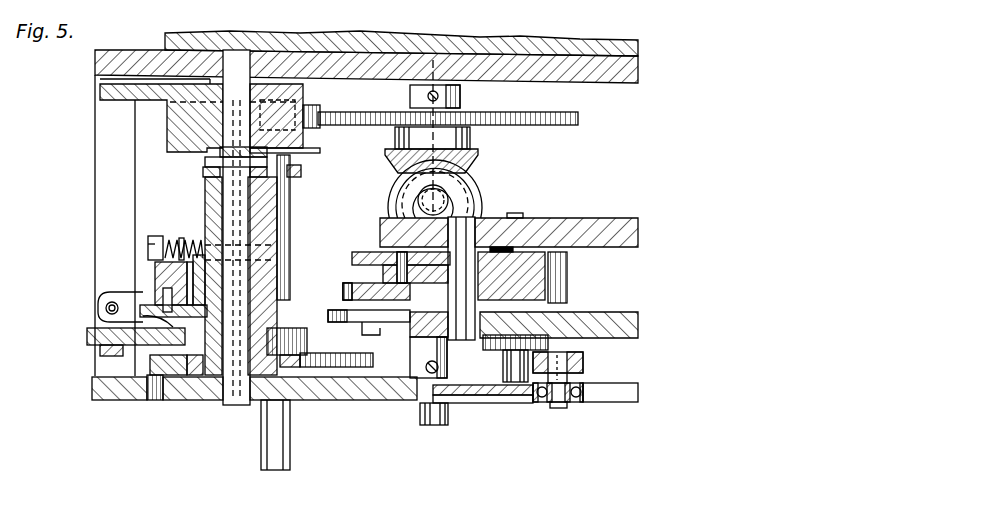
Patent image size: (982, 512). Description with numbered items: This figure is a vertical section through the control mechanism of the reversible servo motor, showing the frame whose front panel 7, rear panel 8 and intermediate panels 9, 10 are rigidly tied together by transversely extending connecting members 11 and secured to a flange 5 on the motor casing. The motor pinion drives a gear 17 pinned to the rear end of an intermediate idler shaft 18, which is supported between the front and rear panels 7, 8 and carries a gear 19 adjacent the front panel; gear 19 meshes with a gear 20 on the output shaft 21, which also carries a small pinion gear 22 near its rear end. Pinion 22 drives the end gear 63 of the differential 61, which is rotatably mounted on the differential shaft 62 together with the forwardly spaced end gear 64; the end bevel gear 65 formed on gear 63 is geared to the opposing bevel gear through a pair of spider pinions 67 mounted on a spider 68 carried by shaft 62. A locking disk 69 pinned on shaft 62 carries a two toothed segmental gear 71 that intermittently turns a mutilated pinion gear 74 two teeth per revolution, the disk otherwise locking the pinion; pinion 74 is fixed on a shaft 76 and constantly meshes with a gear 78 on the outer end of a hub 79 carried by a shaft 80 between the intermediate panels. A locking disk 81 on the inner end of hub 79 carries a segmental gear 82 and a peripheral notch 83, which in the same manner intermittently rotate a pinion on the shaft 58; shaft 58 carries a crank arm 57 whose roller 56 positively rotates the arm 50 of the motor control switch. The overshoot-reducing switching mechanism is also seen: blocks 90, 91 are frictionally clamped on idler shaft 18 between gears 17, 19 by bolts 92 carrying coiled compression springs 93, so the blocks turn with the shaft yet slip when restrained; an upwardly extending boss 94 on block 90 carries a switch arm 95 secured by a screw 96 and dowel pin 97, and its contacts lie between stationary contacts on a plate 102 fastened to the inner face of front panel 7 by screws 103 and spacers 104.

The flange 5 is at (404, 42).
The front panel 7 is at (128, 392).
The rear panel 8 is at (142, 50).
The intermediate panel 9 is at (640, 328).
The intermediate panel 10 is at (592, 218).
The connecting members 11 is at (96, 152).
The gear 17 is at (100, 88).
The intermediate idler shaft 18 is at (287, 203).
The gear 19 is at (178, 378).
The gear 20 is at (335, 353).
The output shaft 21 is at (291, 253).
The pinion gear 22 is at (312, 126).
The arm 50 is at (500, 395).
The roller 56 is at (590, 404).
The crank arm 57 is at (583, 366).
The shaft 58 is at (583, 394).
The differential 61 is at (380, 190).
The differential shaft 62 is at (455, 132).
The end gear 63 is at (580, 119).
The end gear 64 is at (352, 296).
The end bevel gear 65 is at (480, 158).
The spider pinions 67 is at (455, 185).
The spider 68 is at (445, 203).
The locking disk 69 is at (368, 335).
The segmental gear 71 is at (478, 356).
The mutilated pinion gear 74 is at (490, 356).
The shaft 76 is at (520, 380).
The gear 78 is at (345, 306).
The hub 79 is at (535, 216).
The shaft 80 is at (472, 217).
The locking disk 81 is at (376, 250).
The segmental gear 82 is at (570, 282).
The notch 83 is at (570, 263).
The block 90 is at (206, 186).
The block 91 is at (295, 273).
The bolts 92 is at (153, 238).
The coiled compression springs 93 is at (172, 244).
The boss 94 is at (160, 270).
The switch arm 95 is at (108, 292).
The screw 96 is at (190, 243).
The dowel pin 97 is at (165, 292).
The stationary plate 102 is at (95, 340).
The screws 103 is at (141, 318).
The spacers 104 is at (150, 364).